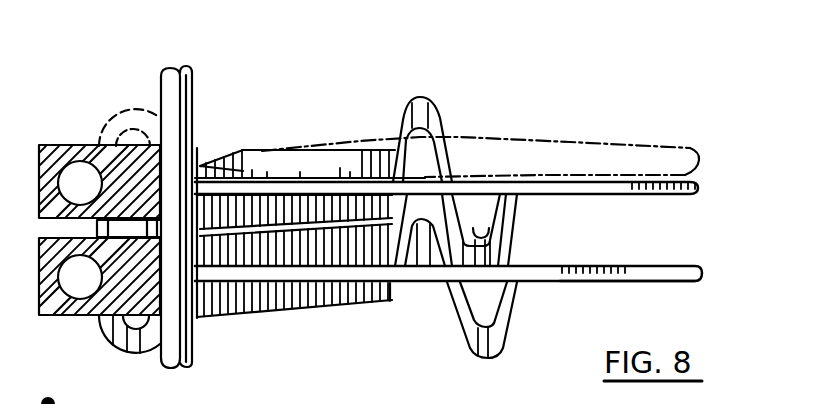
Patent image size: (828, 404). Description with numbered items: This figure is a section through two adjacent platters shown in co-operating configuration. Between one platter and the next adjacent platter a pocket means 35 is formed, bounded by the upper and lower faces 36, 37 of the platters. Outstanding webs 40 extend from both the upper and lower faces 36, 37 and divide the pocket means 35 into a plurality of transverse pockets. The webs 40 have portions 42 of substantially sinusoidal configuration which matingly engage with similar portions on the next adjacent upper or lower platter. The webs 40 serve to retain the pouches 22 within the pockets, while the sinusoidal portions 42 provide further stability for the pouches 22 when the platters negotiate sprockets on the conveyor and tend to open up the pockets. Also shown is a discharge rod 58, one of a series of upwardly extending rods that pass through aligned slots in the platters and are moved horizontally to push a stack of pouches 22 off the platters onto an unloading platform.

The pouch 22 is at (537, 148).
The pocket means 35 is at (656, 225).
The upper face 36 is at (681, 265).
The lower face 37 is at (676, 284).
The web 40 is at (212, 143).
The sinusoidal portion 42 is at (430, 104).
The discharge rod 58 is at (183, 93).